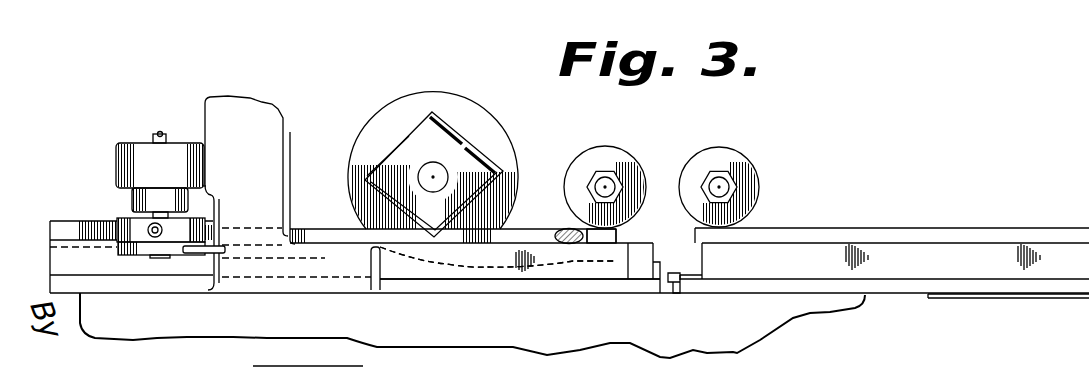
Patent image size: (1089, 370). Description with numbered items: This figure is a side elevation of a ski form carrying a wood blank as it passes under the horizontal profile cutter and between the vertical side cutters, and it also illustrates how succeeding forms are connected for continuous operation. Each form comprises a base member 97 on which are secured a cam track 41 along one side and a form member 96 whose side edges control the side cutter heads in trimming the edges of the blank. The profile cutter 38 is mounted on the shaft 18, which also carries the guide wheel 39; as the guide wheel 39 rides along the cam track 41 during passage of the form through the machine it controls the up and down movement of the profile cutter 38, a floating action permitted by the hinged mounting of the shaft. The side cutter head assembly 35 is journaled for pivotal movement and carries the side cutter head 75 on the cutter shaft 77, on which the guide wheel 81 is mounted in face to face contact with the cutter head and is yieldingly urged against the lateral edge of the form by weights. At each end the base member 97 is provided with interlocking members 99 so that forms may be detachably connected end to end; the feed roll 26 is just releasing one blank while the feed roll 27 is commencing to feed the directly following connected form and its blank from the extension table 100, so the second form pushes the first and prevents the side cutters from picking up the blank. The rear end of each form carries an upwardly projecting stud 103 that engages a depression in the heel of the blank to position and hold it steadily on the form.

The shaft 18 is at (440, 177).
The feed roll 26 is at (618, 157).
The feed roll 27 is at (733, 158).
The side cutter head assembly 35 is at (250, 193).
The profile cutter 38 is at (447, 148).
The guide wheel 39 is at (380, 123).
The cam track 41 is at (485, 267).
The side cutter head 75 is at (177, 236).
The cutter shaft 77 is at (163, 124).
The guide wheel 81 is at (145, 251).
The form member 96 is at (650, 252).
The base member 97 is at (644, 287).
The interlocking members 99 is at (667, 303).
The extension table 100 is at (1043, 300).
The stud 103 is at (573, 244).